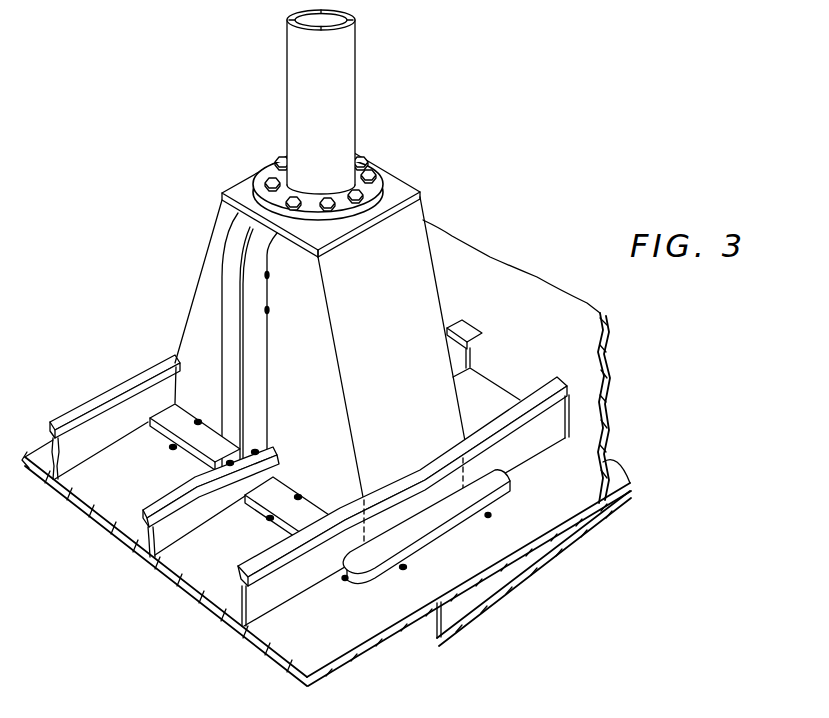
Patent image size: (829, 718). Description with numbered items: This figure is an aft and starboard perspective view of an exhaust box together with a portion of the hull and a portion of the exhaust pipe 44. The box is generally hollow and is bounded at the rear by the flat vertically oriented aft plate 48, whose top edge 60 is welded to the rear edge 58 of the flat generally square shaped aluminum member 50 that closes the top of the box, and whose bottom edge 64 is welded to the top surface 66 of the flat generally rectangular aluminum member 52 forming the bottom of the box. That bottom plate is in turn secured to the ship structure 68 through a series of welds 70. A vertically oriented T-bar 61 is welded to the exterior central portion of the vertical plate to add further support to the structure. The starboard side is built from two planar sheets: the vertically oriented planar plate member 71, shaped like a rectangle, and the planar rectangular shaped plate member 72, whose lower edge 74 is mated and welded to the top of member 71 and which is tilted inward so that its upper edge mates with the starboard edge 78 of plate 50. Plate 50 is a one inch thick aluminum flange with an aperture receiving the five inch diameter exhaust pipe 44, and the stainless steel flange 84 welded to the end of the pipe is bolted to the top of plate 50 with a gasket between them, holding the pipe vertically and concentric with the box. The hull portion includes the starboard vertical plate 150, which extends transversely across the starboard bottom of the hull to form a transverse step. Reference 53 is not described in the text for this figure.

The exhaust pipe 44 is at (347, 95).
The flange 53 is at (387, 174).
The flat generally square shaped aluminum member 50 is at (397, 190).
The stainless steel flange 84 is at (345, 203).
The aft plate 48 is at (320, 347).
The top edge of vertical plate 48 60 is at (225, 234).
The fore T-bar 61 is at (253, 355).
The rear edge of plate 50 58 is at (307, 252).
The starboard edge of plate 50 78 is at (398, 213).
The planar rectangular shaped plate member 72 is at (432, 323).
The bottom edge of vertical plate 48 64 is at (310, 500).
The top surface of bottom horizontal plate 66 is at (268, 497).
The lower edge of plate member 72 74 is at (363, 497).
The vertically oriented planar plate member 71 is at (467, 468).
The flat generally rectangular aluminum member 52 is at (500, 487).
The welds 70 is at (173, 449).
The starboard vertical plate 150 is at (437, 640).
The ship structure 68 is at (388, 618).